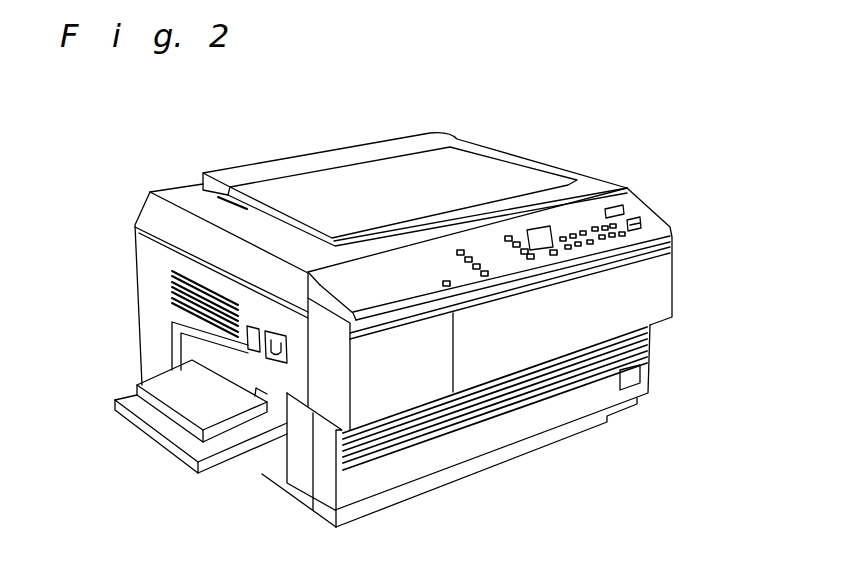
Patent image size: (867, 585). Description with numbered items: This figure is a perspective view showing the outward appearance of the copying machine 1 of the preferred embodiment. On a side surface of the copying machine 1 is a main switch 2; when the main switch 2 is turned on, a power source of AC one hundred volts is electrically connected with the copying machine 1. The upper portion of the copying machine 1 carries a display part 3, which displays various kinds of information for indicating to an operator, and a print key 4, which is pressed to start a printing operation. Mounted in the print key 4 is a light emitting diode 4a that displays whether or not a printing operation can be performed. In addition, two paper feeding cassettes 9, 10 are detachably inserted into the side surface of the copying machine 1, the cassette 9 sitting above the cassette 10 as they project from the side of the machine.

The copying machine 1 is at (140, 210).
The main switch 2 is at (275, 362).
The display part 3 is at (628, 207).
The print key 4 is at (648, 219).
The light emitting diode 4a is at (637, 226).
The paper feeding cassette 9 is at (167, 383).
The paper feeding cassette 10 is at (177, 437).